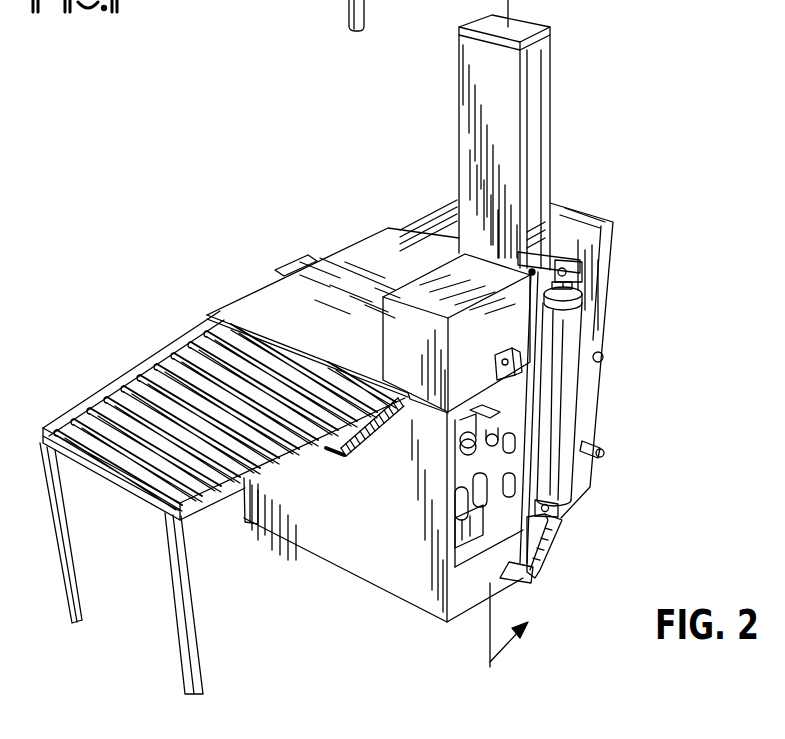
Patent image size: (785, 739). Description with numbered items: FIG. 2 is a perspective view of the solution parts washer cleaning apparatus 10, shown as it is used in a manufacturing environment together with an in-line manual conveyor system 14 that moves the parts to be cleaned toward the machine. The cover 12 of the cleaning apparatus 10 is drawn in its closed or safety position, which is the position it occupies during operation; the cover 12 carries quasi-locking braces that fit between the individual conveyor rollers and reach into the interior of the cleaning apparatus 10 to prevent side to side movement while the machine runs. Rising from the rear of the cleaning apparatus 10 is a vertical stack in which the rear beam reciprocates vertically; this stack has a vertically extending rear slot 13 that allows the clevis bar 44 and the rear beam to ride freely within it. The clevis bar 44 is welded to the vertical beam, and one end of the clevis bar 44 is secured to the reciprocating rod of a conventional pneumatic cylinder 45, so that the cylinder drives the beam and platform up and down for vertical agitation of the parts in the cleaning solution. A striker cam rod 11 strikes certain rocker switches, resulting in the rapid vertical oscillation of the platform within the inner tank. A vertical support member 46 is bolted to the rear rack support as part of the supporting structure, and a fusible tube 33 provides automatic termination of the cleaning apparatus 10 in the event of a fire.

The solution parts washer cleaning apparatus 10 is at (87, 237).
The striker cam rod 11 is at (515, 333).
The cover 12 is at (288, 308).
The rear slot 13 is at (535, 97).
The in-line manual conveyor system 14 is at (130, 385).
The fusible tube 33 is at (520, 357).
The clevis bar 44 is at (527, 278).
The pneumatic cylinder 45 is at (563, 393).
The vertical support member 46 is at (557, 547).